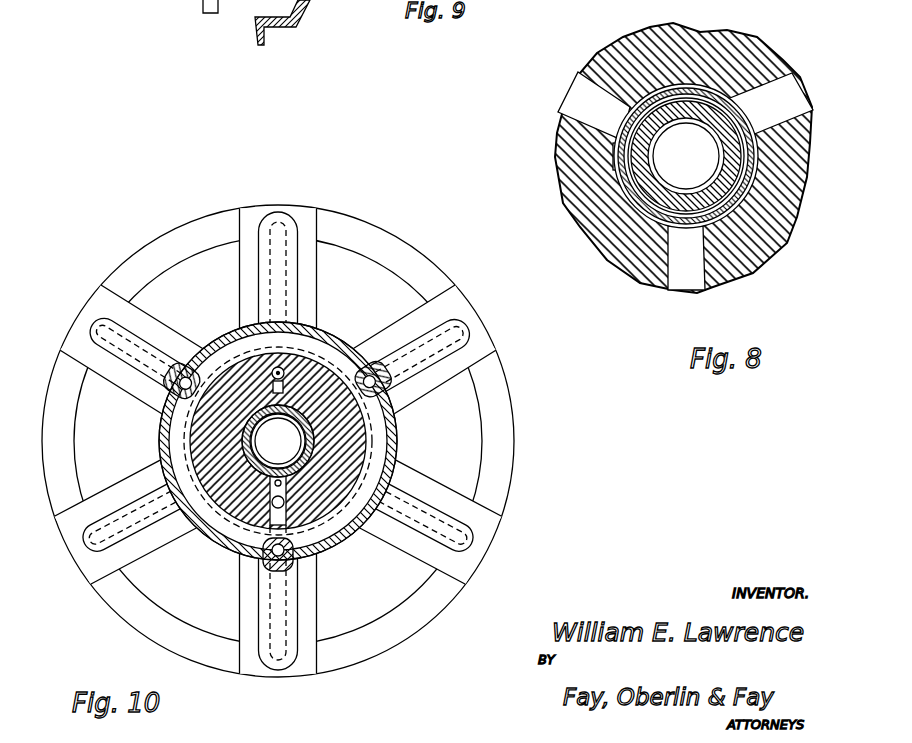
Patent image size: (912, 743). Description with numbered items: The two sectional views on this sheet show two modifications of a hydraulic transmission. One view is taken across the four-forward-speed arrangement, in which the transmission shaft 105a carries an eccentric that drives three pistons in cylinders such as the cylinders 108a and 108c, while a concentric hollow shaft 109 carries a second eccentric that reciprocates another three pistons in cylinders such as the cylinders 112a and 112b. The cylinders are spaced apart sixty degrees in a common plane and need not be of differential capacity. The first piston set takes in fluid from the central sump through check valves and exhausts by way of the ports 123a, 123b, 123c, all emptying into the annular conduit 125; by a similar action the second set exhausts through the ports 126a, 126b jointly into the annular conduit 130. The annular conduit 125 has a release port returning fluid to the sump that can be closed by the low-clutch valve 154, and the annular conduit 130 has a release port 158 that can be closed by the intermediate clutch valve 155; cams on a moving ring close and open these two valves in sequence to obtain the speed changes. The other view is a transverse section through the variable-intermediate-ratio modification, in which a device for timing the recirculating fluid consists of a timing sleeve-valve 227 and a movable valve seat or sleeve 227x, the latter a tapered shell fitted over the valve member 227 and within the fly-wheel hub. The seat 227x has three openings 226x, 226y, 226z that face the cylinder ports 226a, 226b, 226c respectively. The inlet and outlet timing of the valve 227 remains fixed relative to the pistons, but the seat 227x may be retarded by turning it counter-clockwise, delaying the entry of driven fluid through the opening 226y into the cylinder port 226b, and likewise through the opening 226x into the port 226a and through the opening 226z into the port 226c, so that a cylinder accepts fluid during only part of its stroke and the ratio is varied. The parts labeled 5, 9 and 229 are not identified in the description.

In FIG. 10, the cylinder 108a is at (316, 269).
In FIG. 10, the cylinder 112b is at (152, 318).
In FIG. 10, the cylinder 108c is at (137, 578).
In FIG. 10, the cylinder 112a is at (318, 600).
In FIG. 10, the exhaust port 123a is at (284, 230).
In FIG. 10, the exhaust port 126b is at (112, 341).
In FIG. 10, the exhaust port 123c is at (118, 540).
In FIG. 10, the exhaust port 126a is at (272, 627).
In FIG. 10, the exhaust port 123b is at (470, 542).
In FIG. 10, the annular conduit 130 is at (245, 352).
In FIG. 10, the annular conduit 125 is at (168, 445).
In FIG. 10, the concentric hollow shaft 109 is at (305, 438).
In FIG. 10, the low-clutch valve 154 is at (290, 365).
In FIG. 10, the intermediate clutch valve 155 is at (303, 473).
In FIG. 10, the release port 158 is at (303, 523).
In FIG. 10, the transmission shaft 105a is at (278, 441).
In FIG. 8, the valve opening 226x is at (712, 240).
In FIG. 8, the cylinder port 226c is at (769, 104).
In FIG. 8, the cylinder port 226b is at (594, 106).
In FIG. 8, the valve opening 226y is at (620, 146).
In FIG. 8, the cylinder port 226a is at (686, 258).
In FIG. 8, the valve opening 226z is at (737, 108).
In FIG. 8, the movable valve seat 227x is at (746, 155).
In FIG. 8, the timing sleeve-valve 227 is at (746, 166).
In FIG. 8, the bearing ring 9 is at (751, 183).
In FIG. 8, the ring joint 229 is at (650, 203).
In FIG. 8, the shaft 5 is at (685, 157).